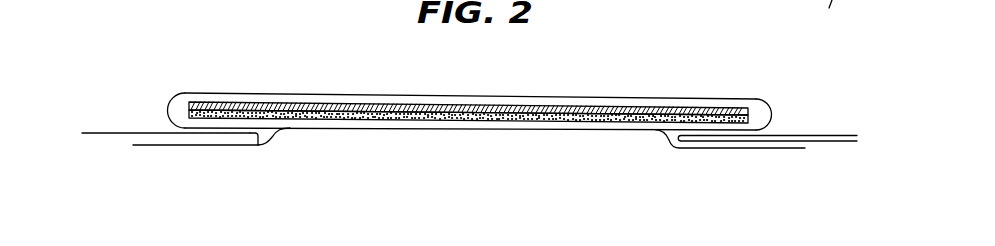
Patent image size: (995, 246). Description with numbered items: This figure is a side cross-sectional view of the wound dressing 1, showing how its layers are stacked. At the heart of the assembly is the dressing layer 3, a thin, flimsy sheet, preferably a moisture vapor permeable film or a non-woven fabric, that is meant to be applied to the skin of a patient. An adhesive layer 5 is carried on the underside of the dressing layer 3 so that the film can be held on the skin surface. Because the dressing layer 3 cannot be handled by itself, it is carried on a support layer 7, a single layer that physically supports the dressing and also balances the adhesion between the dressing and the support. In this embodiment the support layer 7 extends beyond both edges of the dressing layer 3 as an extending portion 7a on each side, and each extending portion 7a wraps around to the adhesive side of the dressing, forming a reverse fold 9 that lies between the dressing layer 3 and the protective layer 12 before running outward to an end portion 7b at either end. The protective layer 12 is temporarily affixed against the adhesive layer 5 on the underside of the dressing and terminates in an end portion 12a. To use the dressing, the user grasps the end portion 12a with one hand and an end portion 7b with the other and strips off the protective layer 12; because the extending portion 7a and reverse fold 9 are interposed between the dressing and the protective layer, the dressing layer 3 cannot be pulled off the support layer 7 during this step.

The wound dressing 1 is at (547, 70).
The dressing layer 3 is at (660, 107).
The adhesive layer 5 is at (612, 121).
The support layer 7 is at (253, 92).
The extending portion 7a is at (166, 112).
The end portion 7b is at (82, 133).
The reverse fold 9 is at (258, 148).
The protective layer 12 is at (295, 130).
The end portion 12a is at (190, 147).